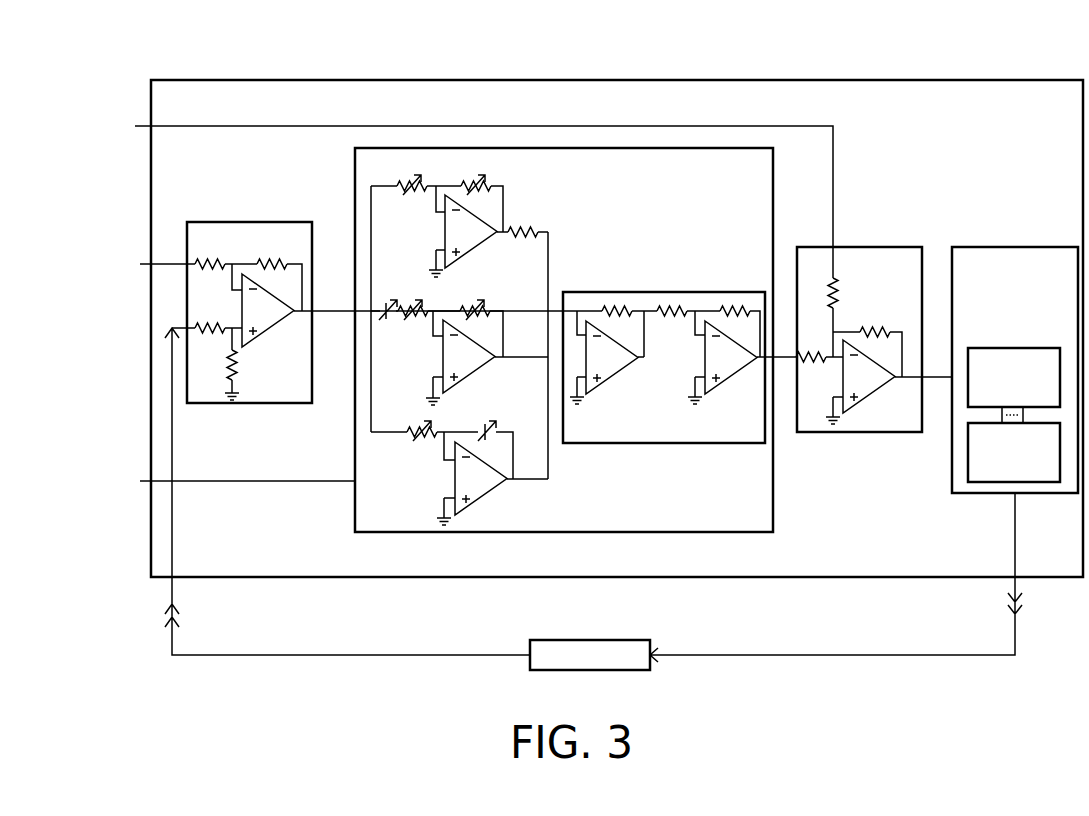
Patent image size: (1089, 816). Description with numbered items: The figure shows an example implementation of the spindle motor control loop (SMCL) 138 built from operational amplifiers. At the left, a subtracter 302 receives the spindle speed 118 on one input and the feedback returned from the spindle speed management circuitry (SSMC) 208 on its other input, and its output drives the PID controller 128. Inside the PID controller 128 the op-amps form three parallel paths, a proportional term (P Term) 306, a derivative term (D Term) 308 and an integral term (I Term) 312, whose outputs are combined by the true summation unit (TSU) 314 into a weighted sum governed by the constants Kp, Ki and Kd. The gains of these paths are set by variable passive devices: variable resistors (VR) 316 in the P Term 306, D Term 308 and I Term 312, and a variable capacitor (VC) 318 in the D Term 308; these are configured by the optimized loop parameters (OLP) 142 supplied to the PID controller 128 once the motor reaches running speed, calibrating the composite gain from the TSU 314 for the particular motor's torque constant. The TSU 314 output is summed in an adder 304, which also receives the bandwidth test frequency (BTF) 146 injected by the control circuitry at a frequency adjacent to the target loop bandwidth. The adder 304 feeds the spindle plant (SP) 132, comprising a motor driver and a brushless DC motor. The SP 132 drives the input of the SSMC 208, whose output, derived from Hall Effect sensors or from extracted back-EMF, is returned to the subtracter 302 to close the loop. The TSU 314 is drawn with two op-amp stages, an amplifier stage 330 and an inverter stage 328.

The spindle motor control loop (SMCL) 138 is at (1072, 115).
The bandwidth test frequency (BTF) 146 is at (439, 235).
The spindle speed 118 is at (182, 281).
The optimized loop parameters (OLP) 142 is at (201, 481).
The subtracter 302 is at (197, 395).
The PID controller 128 is at (763, 181).
The proportional term (P Term) 306 is at (397, 203).
The derivative term (D Term) 308 is at (530, 283).
The integral term (I Term) 312 is at (510, 507).
The variable resistor (VR) 316 is at (415, 300).
The variable capacitor (VC) 318 is at (385, 303).
The true summation unit (TSU) 314 is at (710, 437).
The amplifier stage (AS) 330 is at (597, 357).
The inverter stage (IS) 328 is at (725, 356).
The adder 304 is at (913, 428).
The spindle plant (SP) 132 is at (1033, 334).
The spindle speed management circuitry (SSMC) 208 is at (590, 655).